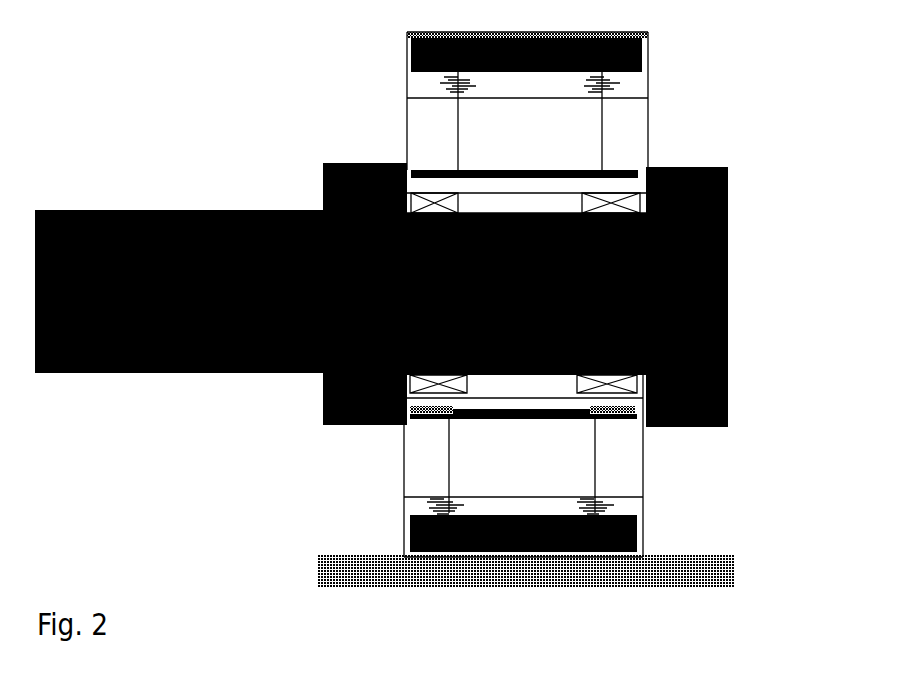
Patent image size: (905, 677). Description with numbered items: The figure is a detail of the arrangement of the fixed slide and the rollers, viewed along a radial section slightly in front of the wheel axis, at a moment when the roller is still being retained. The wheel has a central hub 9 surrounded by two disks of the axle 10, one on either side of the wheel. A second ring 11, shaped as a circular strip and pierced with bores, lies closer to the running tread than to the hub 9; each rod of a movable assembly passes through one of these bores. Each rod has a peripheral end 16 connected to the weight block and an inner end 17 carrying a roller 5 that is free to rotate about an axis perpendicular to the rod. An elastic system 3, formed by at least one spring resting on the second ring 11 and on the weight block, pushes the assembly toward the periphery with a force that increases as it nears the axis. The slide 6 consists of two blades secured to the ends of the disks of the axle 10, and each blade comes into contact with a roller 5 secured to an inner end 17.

The elastic system 3 is at (437, 92).
The roller 5 is at (592, 418).
The slide 6 is at (455, 428).
The central hub 9 is at (603, 199).
The axle 10 is at (731, 326).
The second ring 11 is at (515, 95).
The peripheral end 16 is at (610, 81).
The inner end 17 is at (604, 163).